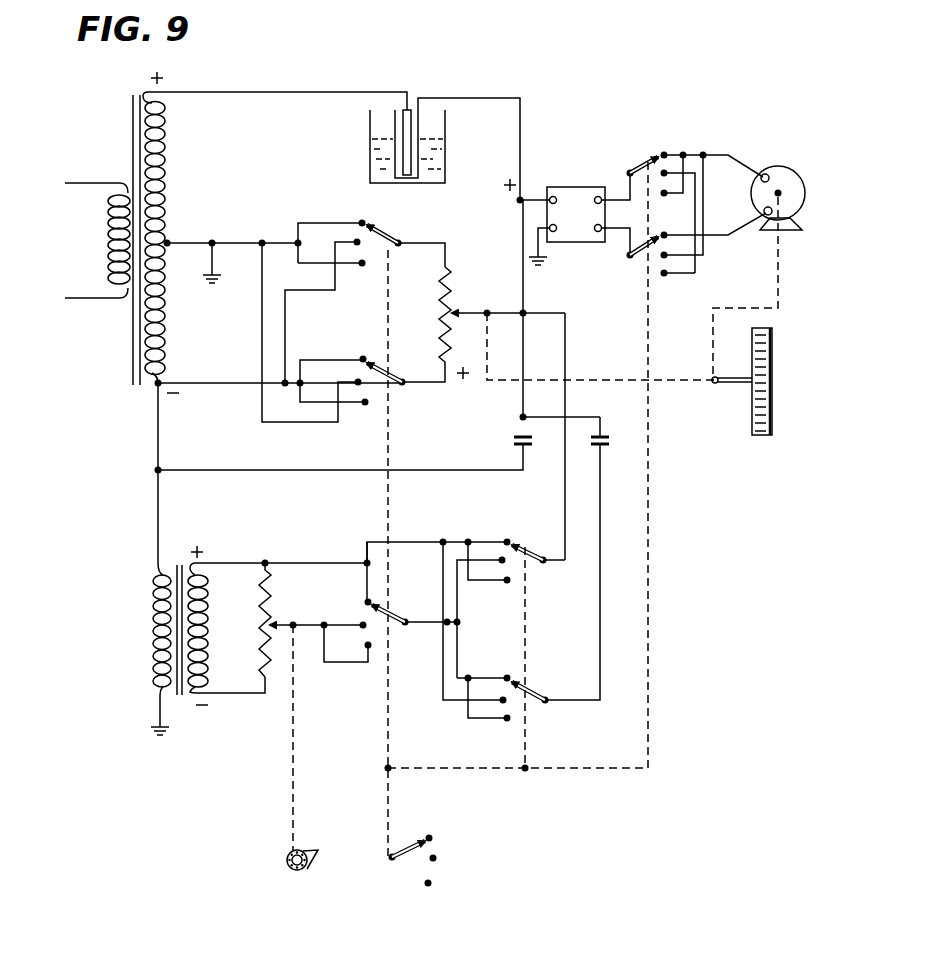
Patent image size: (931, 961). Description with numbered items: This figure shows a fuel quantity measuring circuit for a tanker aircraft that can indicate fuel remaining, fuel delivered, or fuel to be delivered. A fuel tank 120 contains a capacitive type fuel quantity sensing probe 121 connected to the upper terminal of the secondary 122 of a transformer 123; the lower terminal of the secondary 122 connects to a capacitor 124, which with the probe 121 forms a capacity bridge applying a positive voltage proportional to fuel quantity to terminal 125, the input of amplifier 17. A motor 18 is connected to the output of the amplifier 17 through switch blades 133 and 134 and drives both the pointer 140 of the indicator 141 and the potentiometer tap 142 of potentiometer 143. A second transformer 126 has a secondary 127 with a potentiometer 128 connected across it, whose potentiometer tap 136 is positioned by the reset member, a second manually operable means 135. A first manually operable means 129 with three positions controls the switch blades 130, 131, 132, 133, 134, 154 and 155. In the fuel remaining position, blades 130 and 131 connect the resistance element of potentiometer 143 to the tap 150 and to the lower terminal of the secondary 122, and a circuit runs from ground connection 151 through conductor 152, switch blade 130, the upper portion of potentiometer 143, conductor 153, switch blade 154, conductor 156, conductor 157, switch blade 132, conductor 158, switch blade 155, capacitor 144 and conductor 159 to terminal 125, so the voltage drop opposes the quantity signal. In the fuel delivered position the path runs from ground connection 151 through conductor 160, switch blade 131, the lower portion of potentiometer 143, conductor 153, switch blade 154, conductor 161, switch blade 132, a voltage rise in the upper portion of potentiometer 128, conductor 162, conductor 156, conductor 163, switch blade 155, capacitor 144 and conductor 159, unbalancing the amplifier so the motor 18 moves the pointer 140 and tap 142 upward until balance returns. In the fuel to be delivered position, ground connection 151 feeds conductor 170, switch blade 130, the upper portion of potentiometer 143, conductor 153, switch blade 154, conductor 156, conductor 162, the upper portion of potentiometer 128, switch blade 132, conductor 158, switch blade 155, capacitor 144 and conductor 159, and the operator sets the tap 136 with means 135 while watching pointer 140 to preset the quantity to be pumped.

The amplifier 17 is at (572, 187).
The motor 18 is at (778, 166).
The fuel tank 120 is at (370, 153).
The capacitive type fuel quantity sensing probe 121 is at (413, 104).
The secondary 122 is at (168, 155).
The transformer 123 is at (125, 160).
The capacitor 124 is at (528, 449).
The terminal 125 is at (518, 200).
The second transformer 126 is at (145, 592).
The secondary 127 is at (209, 640).
The potentiometer 128 is at (277, 620).
The first manually operable means 129 is at (400, 864).
The switch blade 130 is at (397, 241).
The switch blade 131 is at (403, 381).
The switch blade 132 is at (401, 618).
The switch blade 133 is at (633, 170).
The switch blade 134 is at (632, 258).
The second manually operable means 135 is at (300, 871).
The potentiometer tap 136 is at (278, 634).
The pointer 140 is at (732, 377).
The indicator 141 is at (748, 388).
The potentiometer tap 142 is at (470, 312).
The potentiometer 143 is at (457, 299).
The capacitor 144 is at (604, 449).
The tap 150 is at (170, 241).
The ground connection 151 is at (220, 276).
The conductor 152 is at (317, 223).
The conductor 153 is at (565, 342).
The switch blade 154 is at (545, 556).
The switch blade 155 is at (547, 697).
The conductor 156 is at (414, 542).
The conductor 157 is at (366, 599).
The conductor 158 is at (459, 659).
The conductor 159 is at (523, 358).
The conductor 160 is at (262, 350).
The conductor 161 is at (458, 602).
The conductor 162 is at (312, 563).
The conductor 163 is at (443, 666).
The conductor 170 is at (318, 264).